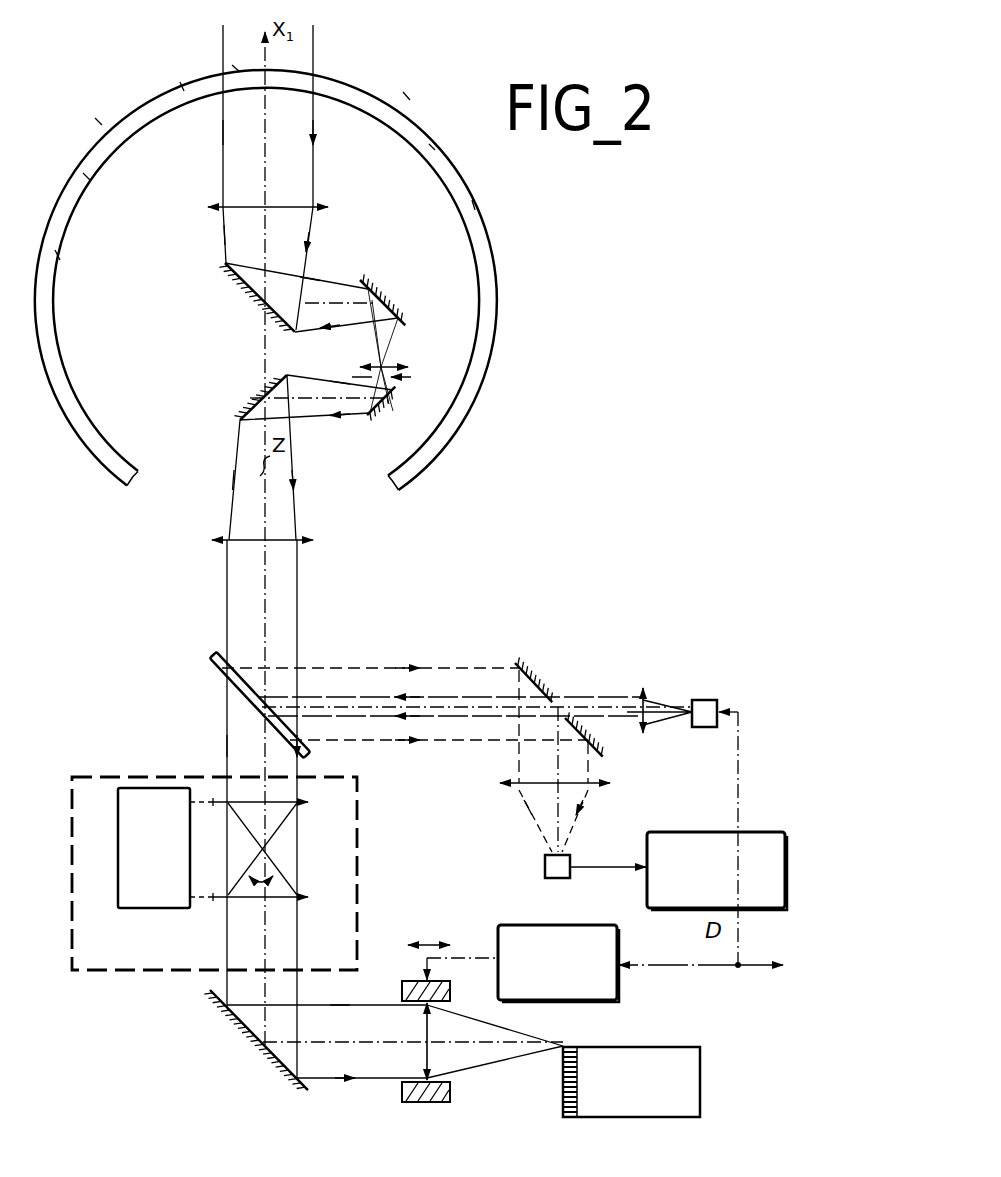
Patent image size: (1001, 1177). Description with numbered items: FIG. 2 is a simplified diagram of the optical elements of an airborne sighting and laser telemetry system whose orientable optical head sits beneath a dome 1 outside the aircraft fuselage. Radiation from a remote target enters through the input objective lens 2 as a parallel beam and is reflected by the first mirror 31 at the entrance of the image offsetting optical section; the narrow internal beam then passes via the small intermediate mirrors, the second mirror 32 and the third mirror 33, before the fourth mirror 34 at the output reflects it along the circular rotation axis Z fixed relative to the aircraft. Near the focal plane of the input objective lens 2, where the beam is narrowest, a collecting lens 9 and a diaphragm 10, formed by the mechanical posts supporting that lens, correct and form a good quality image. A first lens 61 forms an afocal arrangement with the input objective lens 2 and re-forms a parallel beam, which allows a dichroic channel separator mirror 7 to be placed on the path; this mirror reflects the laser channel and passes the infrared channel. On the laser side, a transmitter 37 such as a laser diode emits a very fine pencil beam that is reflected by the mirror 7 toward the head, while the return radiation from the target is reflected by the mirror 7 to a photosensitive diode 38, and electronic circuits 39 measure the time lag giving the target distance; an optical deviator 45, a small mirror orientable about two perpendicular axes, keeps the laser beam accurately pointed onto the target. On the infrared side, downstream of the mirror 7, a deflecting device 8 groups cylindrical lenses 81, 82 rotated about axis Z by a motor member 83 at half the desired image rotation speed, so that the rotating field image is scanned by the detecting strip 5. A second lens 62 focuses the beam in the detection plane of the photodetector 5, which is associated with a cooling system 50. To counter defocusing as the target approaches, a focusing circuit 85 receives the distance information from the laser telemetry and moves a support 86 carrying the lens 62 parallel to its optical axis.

The dome 1 is at (497, 300).
The input objective lens 2 is at (320, 209).
The first mirror 31 is at (222, 264).
The second mirror 32 is at (400, 324).
The third mirror 33 is at (388, 398).
The fourth mirror 34 is at (246, 406).
The collecting lens 9 is at (394, 364).
The diaphragm 10 is at (412, 380).
The first lens 61 is at (308, 540).
The channel separator mirror 7 is at (214, 660).
The optical deviator 45 is at (543, 678).
The transmitter 37 is at (710, 700).
The photosensitive diode 38 is at (568, 862).
The electronic circuits 39 is at (690, 834).
The focusing circuit 85 is at (558, 926).
The deflecting device 8 is at (233, 873).
The cylindrical lens 81 is at (306, 804).
The cylindrical lens 82 is at (307, 897).
The motor member 83 is at (118, 842).
The support 86 is at (404, 986).
The second lens 62 is at (424, 1052).
The cooling system 50 is at (614, 1066).
The photodetector 5 is at (562, 1086).